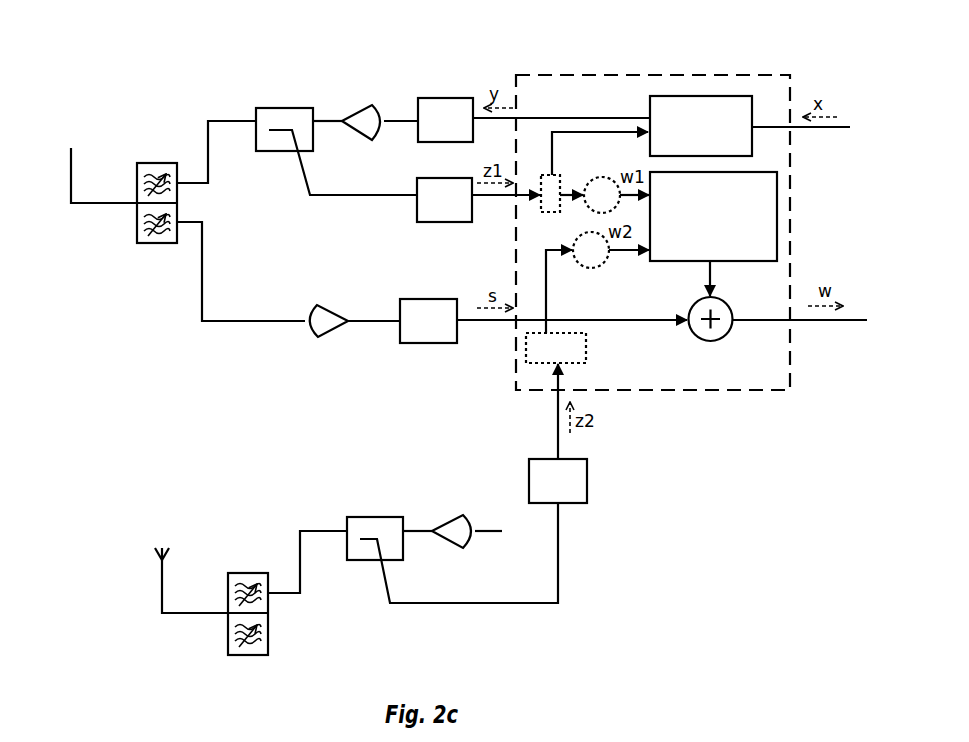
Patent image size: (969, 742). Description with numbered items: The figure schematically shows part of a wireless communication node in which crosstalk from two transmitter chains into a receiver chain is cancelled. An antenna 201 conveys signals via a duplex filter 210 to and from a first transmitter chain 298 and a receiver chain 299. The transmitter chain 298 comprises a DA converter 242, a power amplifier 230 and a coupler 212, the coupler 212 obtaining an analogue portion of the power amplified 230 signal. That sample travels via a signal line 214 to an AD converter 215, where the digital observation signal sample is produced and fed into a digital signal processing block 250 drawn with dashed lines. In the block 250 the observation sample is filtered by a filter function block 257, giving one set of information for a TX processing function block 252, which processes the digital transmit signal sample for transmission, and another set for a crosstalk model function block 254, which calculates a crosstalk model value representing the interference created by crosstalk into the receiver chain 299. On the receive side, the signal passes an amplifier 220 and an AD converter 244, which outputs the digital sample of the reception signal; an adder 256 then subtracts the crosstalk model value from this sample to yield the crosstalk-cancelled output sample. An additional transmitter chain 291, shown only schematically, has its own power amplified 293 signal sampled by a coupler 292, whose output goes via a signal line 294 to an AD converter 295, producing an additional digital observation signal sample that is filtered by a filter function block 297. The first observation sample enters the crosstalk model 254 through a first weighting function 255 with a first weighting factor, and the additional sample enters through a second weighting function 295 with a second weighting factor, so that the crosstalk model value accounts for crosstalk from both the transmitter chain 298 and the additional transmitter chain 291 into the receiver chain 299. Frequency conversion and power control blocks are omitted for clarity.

The antenna 201 is at (72, 146).
The duplex filter 210 is at (137, 232).
The coupler 212 is at (273, 107).
The signal line 214 is at (344, 197).
The AD converter 215 is at (428, 224).
The receive amplifier 220 is at (323, 337).
The power amplifier 230 is at (373, 105).
The DA converter 242 is at (440, 98).
The AD converter 244 is at (430, 344).
The digital signal processing block 250 is at (588, 73).
The TX processing function block 252 is at (670, 95).
The crosstalk model function block 254 is at (777, 193).
The first weighting function 255 is at (593, 179).
The adder 256 is at (699, 342).
The filter function block 257 is at (543, 209).
The additional transmitter chain 291 is at (254, 534).
The coupler 292 is at (364, 517).
The power amplifier 293 is at (465, 515).
The signal line 294 is at (435, 607).
The AD converter 295 is at (597, 266).
The filter function block 297 is at (527, 363).
The transmitter chain 298 is at (185, 133).
The receiver chain 299 is at (189, 310).